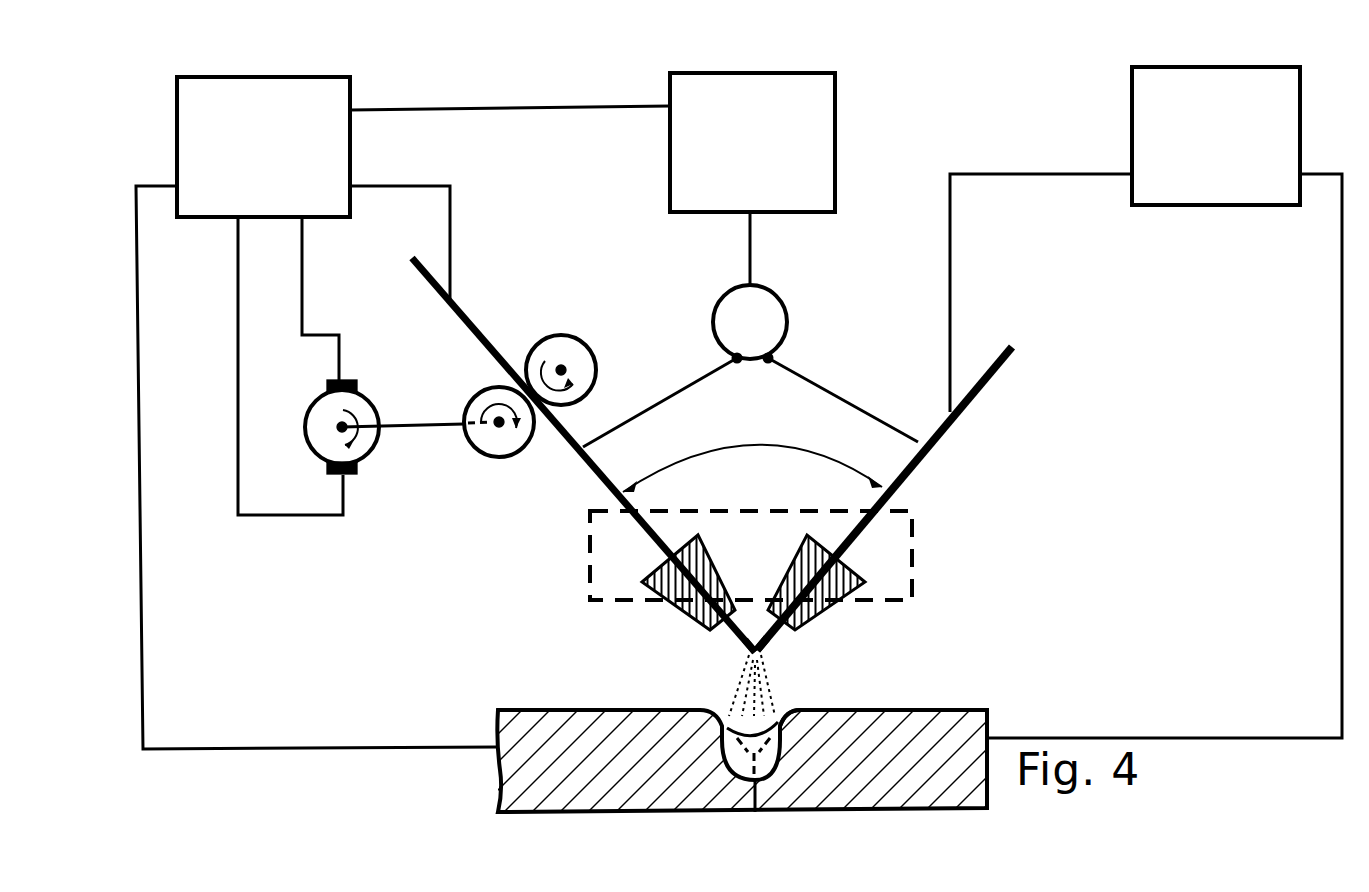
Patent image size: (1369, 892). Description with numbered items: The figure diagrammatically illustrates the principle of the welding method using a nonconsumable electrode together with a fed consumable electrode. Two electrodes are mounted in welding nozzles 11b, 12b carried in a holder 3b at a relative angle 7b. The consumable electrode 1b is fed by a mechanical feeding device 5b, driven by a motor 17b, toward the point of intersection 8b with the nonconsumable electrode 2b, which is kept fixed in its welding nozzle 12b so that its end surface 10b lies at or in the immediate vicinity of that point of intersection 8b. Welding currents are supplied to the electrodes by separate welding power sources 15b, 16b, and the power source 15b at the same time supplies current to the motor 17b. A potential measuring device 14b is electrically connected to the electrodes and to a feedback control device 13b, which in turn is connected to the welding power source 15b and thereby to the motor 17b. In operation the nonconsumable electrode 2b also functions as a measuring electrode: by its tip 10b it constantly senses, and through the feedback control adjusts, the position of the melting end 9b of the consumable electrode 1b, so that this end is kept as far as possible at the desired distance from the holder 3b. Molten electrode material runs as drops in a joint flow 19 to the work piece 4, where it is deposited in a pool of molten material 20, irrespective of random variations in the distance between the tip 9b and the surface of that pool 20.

The consumable electrode 1b is at (467, 315).
The nonconsumable electrode 2b is at (940, 422).
The holder 3b is at (898, 548).
The work piece 4 is at (940, 738).
The mechanical feeding device 5b is at (538, 367).
The relative angle 7b is at (797, 450).
The point of intersection 8b is at (762, 667).
The melting end of the consumable electrode 9b is at (750, 652).
The end surface of the nonconsumable electrode 10b is at (763, 653).
The welding nozzle 11b is at (698, 556).
The welding nozzle 12b is at (810, 560).
The feedback control device 13b is at (803, 93).
The potential measuring device 14b is at (767, 310).
The welding power source 15b is at (318, 100).
The welding power source 16b is at (1160, 97).
The motor 17b is at (323, 413).
The joint flow 19 is at (753, 713).
The pool of molten material 20 is at (800, 717).